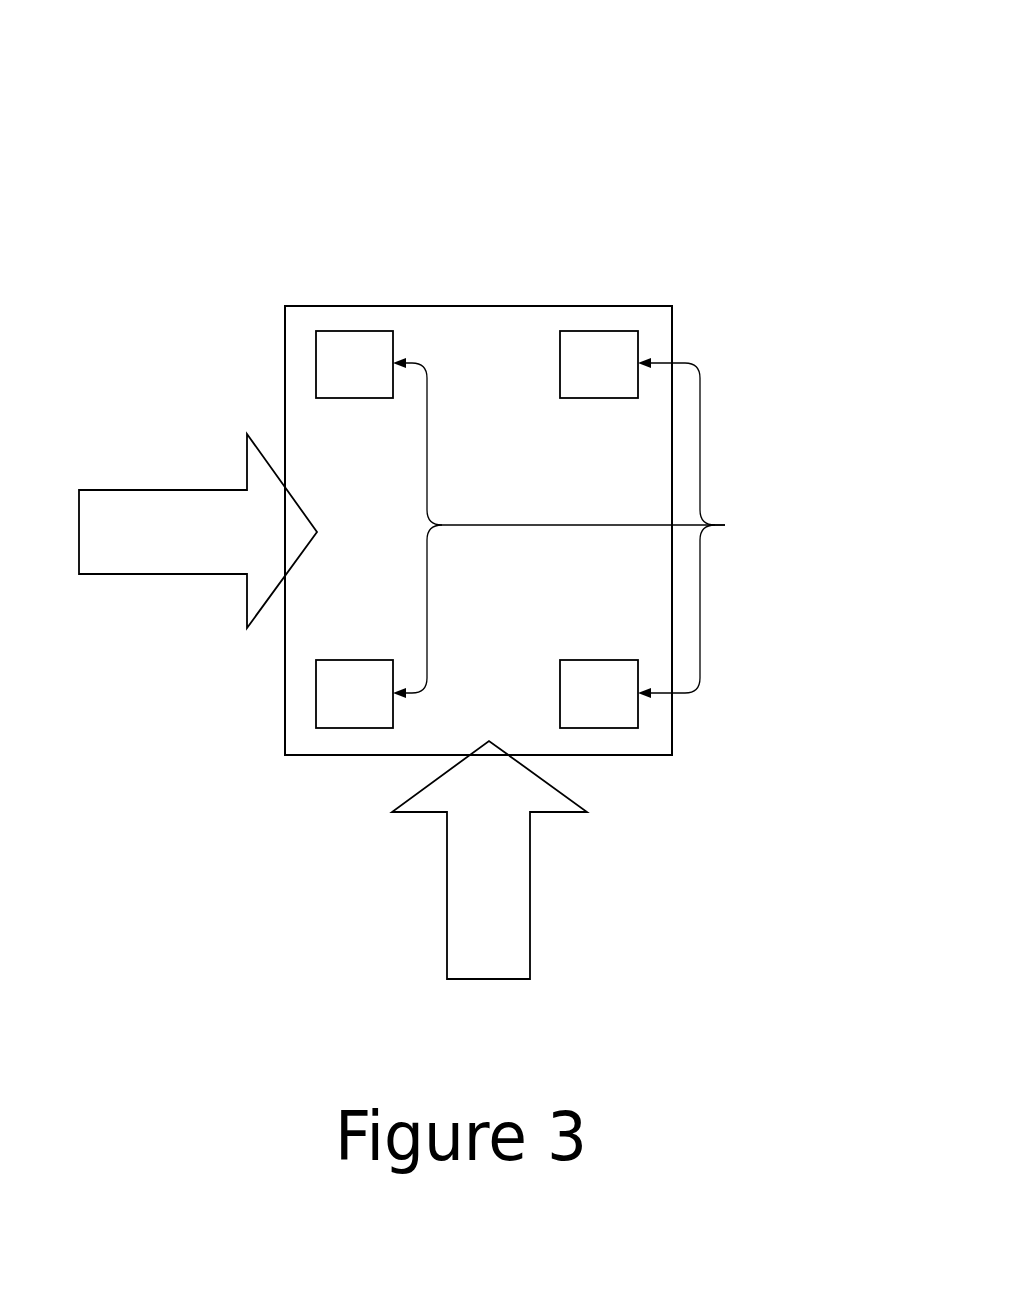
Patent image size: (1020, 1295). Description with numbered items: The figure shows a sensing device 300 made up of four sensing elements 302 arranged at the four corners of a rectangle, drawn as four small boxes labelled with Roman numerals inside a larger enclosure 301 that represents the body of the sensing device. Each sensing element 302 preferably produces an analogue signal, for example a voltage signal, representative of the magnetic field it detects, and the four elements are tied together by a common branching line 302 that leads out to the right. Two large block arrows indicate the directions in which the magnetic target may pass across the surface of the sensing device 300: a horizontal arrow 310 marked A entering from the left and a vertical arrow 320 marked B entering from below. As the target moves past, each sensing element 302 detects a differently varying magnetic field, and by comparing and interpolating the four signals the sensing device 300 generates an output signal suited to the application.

The sensing device 300 is at (331, 185).
The enclosure / housing containing regions I-IV 301 is at (572, 296).
The sensing elements 302 is at (725, 525).
The input flow A 310 is at (237, 463).
The input flow B 320 is at (530, 923).